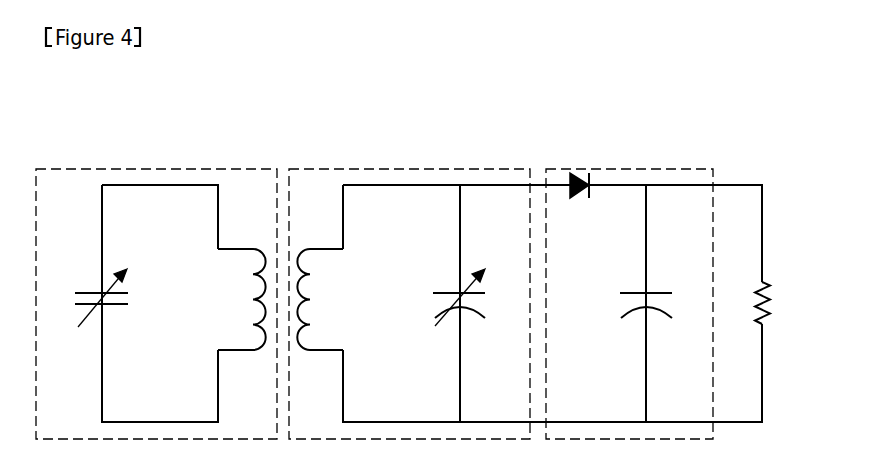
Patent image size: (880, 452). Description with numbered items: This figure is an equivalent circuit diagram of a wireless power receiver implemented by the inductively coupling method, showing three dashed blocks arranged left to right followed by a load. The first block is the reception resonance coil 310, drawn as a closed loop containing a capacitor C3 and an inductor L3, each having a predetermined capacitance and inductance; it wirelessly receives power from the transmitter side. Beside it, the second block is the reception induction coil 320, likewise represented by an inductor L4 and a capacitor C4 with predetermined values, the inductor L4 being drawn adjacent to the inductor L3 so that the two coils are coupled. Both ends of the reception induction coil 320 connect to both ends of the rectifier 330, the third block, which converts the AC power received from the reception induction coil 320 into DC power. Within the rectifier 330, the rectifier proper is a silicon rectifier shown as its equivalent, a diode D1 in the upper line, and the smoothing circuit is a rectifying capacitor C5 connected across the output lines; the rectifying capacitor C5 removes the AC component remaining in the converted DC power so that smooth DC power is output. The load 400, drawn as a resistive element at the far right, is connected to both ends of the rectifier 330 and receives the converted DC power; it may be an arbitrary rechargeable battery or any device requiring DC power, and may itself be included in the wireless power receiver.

The reception resonance coil 310 is at (186, 168).
The reception induction coil 320 is at (435, 168).
The rectifier 330 is at (650, 168).
The load 400 is at (773, 291).
The capacitor C3 is at (86, 298).
The inductor L3 is at (242, 299).
The inductor L4 is at (323, 299).
The capacitor C4 is at (475, 297).
The diode D1 is at (579, 166).
The rectifying capacitor C5 is at (661, 302).